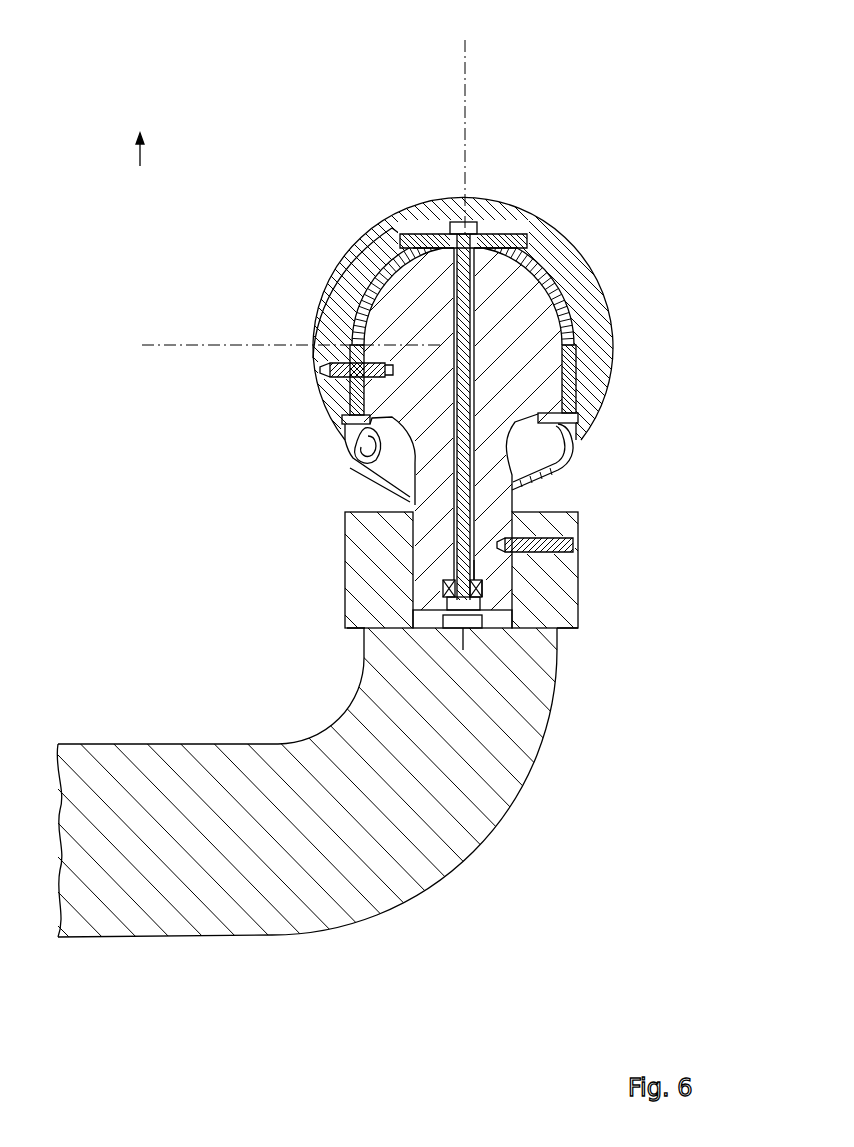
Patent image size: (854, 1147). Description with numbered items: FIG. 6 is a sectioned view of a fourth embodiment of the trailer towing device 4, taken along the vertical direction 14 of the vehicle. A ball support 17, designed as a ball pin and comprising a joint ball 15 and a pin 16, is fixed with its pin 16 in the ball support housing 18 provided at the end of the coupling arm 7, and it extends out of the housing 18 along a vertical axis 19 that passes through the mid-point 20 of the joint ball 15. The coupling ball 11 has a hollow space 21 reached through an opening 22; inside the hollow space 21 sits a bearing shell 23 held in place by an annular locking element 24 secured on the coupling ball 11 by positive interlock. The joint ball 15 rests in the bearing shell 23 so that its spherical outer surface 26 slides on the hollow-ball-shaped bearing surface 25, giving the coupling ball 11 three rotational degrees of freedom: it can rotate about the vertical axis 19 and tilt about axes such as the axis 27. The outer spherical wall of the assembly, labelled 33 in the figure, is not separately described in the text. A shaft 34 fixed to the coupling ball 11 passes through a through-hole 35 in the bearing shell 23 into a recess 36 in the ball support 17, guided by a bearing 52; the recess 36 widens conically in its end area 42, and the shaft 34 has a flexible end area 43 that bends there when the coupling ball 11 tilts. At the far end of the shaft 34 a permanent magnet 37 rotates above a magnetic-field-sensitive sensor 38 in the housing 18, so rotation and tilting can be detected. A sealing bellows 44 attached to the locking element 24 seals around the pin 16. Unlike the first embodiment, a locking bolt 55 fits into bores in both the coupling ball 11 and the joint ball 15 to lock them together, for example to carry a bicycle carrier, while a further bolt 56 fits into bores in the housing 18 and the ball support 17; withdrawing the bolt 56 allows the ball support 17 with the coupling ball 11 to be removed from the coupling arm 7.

The trailer towing device 4 is at (259, 64).
The coupling arm 7 is at (485, 832).
The coupling ball 11 is at (356, 262).
The vertical direction 14 is at (132, 150).
The joint ball 15 is at (387, 305).
The pin 16 is at (500, 510).
The ball support 17 is at (411, 505).
The ball support housing 18 is at (578, 620).
The vertical axis 19 is at (468, 74).
The mid-point 20 is at (462, 347).
The hollow space 21 is at (372, 443).
The opening 22 is at (567, 457).
The bearing shell 23 is at (580, 400).
The annular locking element 24 is at (343, 418).
The bearing surface 25 is at (568, 358).
The spherical outer surface 26 is at (366, 444).
The axis 27 is at (188, 343).
The housing 33 is at (612, 328).
The shaft 34 is at (463, 541).
The through-hole 35 is at (443, 266).
The recess 36 is at (472, 568).
The permanent magnet 37 is at (452, 610).
The magnetic-field-sensitive sensor 38 is at (513, 628).
The end area 42 is at (440, 237).
The end area 43 is at (478, 262).
The sealing bellows 44 is at (542, 451).
The bearing 52 is at (450, 585).
The bolt 55 is at (325, 370).
The bolt 56 is at (573, 545).